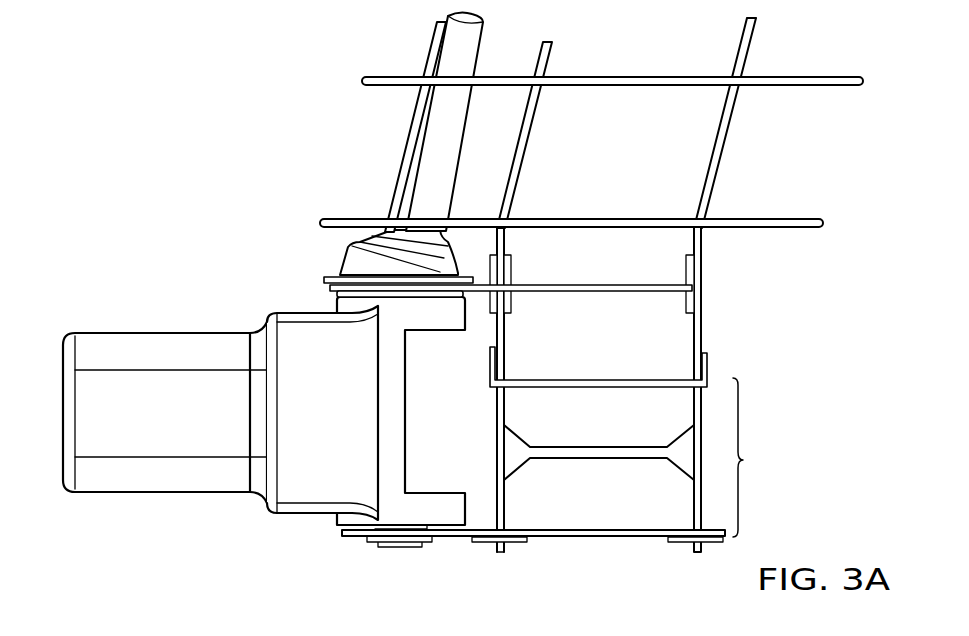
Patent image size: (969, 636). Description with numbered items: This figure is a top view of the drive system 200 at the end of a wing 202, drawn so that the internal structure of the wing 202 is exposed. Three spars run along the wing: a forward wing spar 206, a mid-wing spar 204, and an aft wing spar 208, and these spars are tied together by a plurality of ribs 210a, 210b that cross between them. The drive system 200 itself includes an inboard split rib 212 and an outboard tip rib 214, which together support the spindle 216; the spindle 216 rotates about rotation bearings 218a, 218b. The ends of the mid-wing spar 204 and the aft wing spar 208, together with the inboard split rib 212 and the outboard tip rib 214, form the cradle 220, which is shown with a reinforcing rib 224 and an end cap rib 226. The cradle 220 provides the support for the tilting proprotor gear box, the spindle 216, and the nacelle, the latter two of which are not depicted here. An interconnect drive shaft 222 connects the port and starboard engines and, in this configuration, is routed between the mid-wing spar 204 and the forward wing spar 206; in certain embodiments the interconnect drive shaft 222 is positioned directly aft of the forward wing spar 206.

The drive system 200 is at (222, 152).
The wing 202 is at (827, 153).
The mid-wing spar 204 is at (499, 554).
The forward wing spar 206 is at (428, 48).
The aft wing spar 208 is at (716, 174).
The rib 210a is at (627, 77).
The rib 210b is at (596, 218).
The inboard split rib 212 is at (568, 291).
The outboard tip rib 214 is at (600, 530).
The spindle 216 is at (295, 514).
The rotation bearing 218a is at (398, 548).
The rotation bearing 218b is at (313, 253).
The cradle 220 is at (763, 457).
The interconnect drive shaft 222 is at (481, 38).
The reinforcing rib 224 is at (600, 445).
The end cap rib 226 is at (638, 378).